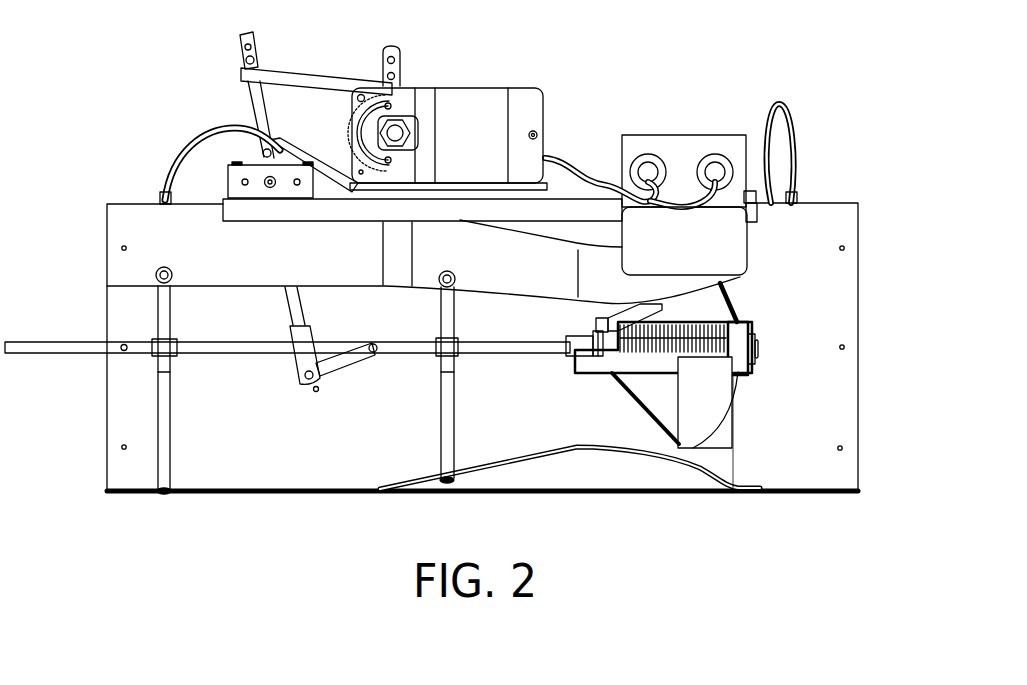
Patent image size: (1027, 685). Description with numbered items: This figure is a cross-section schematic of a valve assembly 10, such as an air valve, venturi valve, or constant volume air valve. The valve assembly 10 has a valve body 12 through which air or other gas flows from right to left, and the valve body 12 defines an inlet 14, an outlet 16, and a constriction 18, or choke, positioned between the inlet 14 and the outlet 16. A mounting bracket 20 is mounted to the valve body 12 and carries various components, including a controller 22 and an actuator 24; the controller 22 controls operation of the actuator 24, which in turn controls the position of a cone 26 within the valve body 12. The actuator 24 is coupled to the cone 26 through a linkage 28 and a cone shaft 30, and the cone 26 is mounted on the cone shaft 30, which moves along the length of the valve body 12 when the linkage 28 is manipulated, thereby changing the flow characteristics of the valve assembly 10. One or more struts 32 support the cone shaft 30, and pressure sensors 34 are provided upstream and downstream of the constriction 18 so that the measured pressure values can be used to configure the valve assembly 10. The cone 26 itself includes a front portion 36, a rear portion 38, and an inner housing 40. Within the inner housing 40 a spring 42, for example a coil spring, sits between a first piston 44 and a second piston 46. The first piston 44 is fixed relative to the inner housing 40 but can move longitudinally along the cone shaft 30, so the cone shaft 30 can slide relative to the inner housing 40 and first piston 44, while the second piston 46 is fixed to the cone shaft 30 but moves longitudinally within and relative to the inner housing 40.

The valve assembly 10 is at (783, 55).
The valve body 12 is at (265, 480).
The inlet 14 is at (880, 307).
The outlet 16 is at (84, 241).
The constriction 18 is at (575, 450).
The mounting bracket 20 is at (733, 243).
The controller 22 is at (673, 135).
The actuator 24 is at (478, 85).
The cone 26 is at (733, 423).
The linkage 28 is at (225, 55).
The cone shaft 30 is at (493, 355).
The strut 32 is at (170, 422).
The pressure sensor 34 is at (163, 198).
The front portion 36 is at (720, 392).
The rear portion 38 is at (643, 417).
The inner housing 40 is at (588, 375).
The spring 42 is at (710, 320).
The first piston 44 is at (738, 333).
The second piston 46 is at (593, 335).